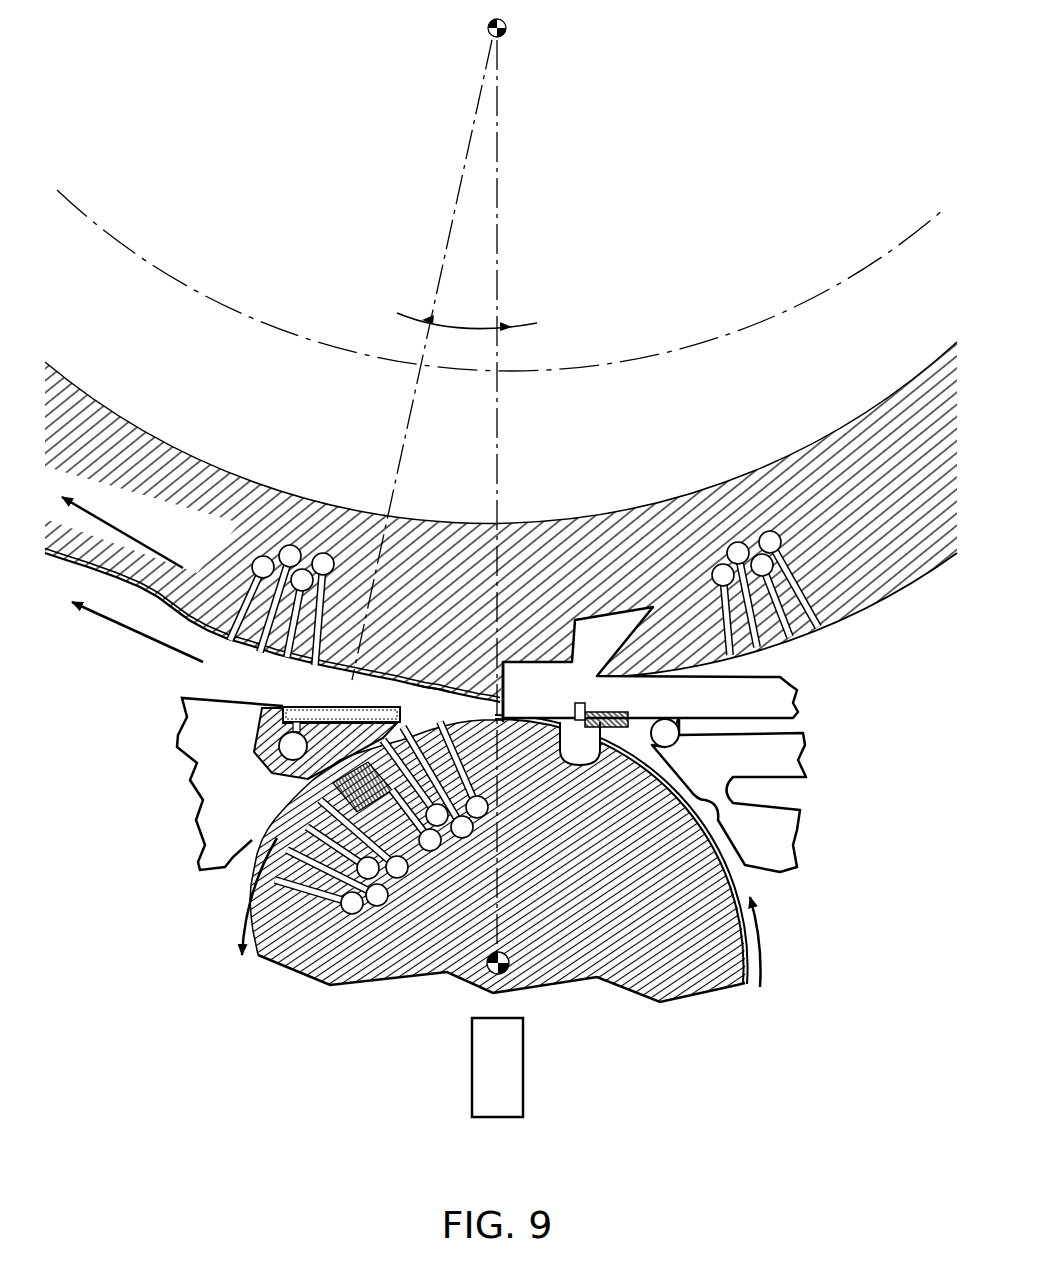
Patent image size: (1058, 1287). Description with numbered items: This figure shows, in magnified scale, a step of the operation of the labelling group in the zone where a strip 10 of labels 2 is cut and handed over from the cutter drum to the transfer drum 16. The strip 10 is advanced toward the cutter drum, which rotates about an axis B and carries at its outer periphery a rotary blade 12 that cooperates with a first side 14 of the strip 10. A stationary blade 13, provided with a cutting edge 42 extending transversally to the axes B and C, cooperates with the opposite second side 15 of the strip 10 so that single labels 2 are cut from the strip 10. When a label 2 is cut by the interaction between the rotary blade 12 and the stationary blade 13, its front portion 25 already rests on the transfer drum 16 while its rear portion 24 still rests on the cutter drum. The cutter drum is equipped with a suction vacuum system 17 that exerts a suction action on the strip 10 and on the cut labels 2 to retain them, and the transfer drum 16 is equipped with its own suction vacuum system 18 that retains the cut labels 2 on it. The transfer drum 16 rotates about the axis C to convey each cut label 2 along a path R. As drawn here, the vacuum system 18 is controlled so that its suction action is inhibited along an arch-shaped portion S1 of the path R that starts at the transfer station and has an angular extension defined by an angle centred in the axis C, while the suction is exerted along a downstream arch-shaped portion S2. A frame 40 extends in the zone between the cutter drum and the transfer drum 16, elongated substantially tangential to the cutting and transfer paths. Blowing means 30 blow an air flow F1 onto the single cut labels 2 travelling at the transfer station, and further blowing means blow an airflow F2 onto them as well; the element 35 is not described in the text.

The label 2 is at (240, 660).
The strip 10 is at (702, 860).
The rotary blade 12 is at (500, 722).
The stationary blade 13 is at (590, 710).
The first side 14 is at (693, 836).
The second side 15 is at (748, 884).
The transfer drum 16 is at (830, 498).
The suction vacuum system 17 is at (301, 903).
The suction vacuum system 18 is at (292, 535).
The rear portion 24 is at (437, 677).
The front portion 25 is at (200, 625).
The blowing means 30 is at (265, 761).
The sensor 35 is at (503, 1062).
The frame 40 is at (795, 712).
The cutting edge 42 is at (590, 740).
The axis C is at (484, 42).
The axis B is at (510, 970).
The path R is at (182, 280).
The arch-shaped portion S1 is at (455, 380).
The arch-shaped portion S2 is at (273, 320).
The air flow F1 is at (483, 713).
The airflow F2 is at (512, 781).